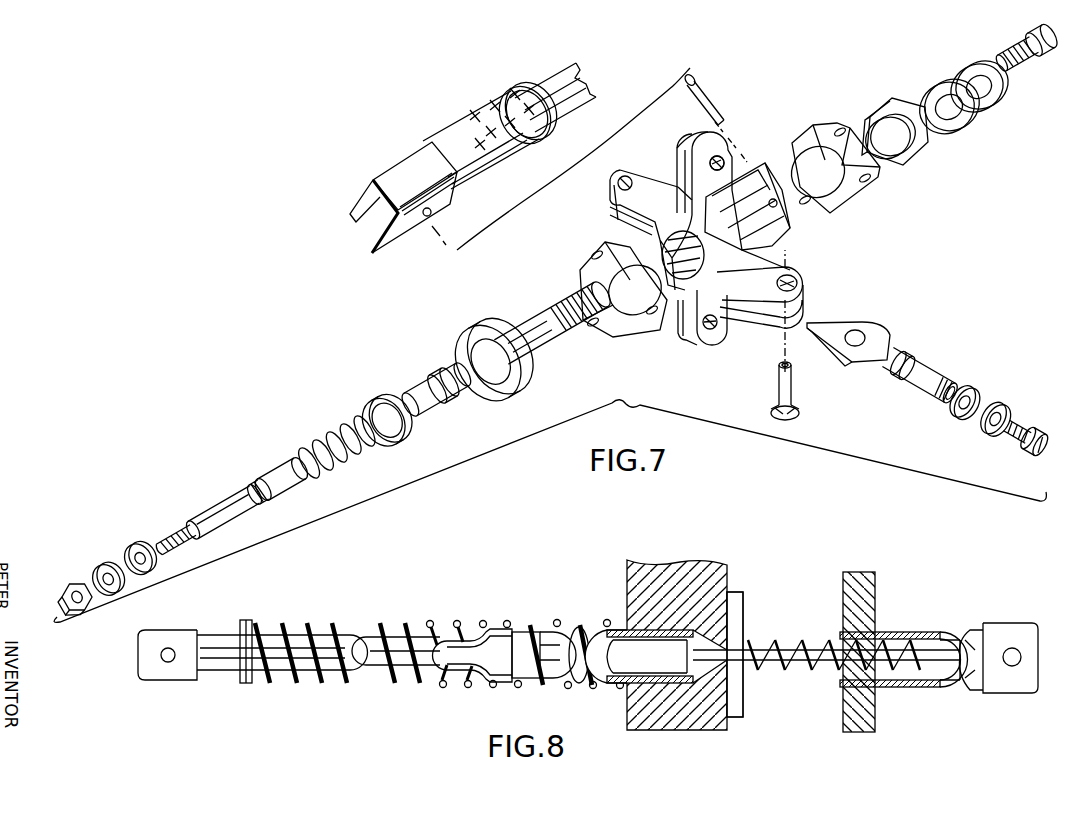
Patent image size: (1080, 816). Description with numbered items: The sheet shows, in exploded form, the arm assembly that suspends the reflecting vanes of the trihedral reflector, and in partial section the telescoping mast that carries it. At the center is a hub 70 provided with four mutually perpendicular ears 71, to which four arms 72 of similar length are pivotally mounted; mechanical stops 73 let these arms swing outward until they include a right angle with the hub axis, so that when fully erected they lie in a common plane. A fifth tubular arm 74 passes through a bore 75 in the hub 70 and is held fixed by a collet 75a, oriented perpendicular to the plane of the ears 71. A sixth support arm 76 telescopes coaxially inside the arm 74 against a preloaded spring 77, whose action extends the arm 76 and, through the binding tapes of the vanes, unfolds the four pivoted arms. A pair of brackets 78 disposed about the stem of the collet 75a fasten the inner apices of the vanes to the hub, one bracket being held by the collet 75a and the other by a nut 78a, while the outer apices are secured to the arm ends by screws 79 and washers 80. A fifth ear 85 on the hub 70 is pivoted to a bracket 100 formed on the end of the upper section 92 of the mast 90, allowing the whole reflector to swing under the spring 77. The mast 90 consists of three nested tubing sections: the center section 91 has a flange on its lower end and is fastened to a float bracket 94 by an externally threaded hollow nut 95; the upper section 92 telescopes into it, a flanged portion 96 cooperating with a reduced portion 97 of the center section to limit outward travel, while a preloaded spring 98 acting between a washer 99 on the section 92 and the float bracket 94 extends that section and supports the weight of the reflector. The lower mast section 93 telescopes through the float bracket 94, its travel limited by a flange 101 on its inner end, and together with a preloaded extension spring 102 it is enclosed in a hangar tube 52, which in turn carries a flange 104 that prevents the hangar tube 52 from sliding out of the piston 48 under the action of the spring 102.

In FIG. 7, the hub 70 is at (787, 240).
In FIG. 7, the ears 71 is at (703, 170).
In FIG. 7, the arms 72 is at (937, 375).
In FIG. 7, the mechanical stops 73 is at (845, 322).
In FIG. 7, the fifth tubular arm 74 is at (403, 385).
In FIG. 7, the bore 75 is at (688, 272).
In FIG. 7, the collet 75a is at (506, 322).
In FIG. 7, the sixth support arm 76 is at (222, 505).
In FIG. 7, the spring 77 is at (312, 450).
In FIG. 7, the brackets 78 is at (592, 268).
In FIG. 7, the nut 78a is at (880, 110).
In FIG. 7, the screws 79 is at (1018, 54).
In FIG. 7, the washers 80 is at (958, 76).
In FIG. 7, the fifth ear 85 is at (747, 172).
In FIG. 7, the mast 90 is at (563, 126).
In FIG. 8, the mast 90 is at (557, 612).
In FIG. 8, the center section 91 is at (603, 628).
In FIG. 7, the upper section 92 is at (553, 75).
In FIG. 8, the upper section 92 is at (303, 640).
In FIG. 8, the lower mast section 93 is at (770, 648).
In FIG. 8, the float bracket 94 is at (632, 710).
In FIG. 8, the externally threaded hollow nut 95 is at (743, 615).
In FIG. 8, the flanged portion 96 is at (520, 630).
In FIG. 8, the reduced portion 97 is at (478, 632).
In FIG. 8, the spring 98 is at (345, 625).
In FIG. 7, the washer 99 is at (528, 82).
In FIG. 8, the washer 99 is at (248, 624).
In FIG. 7, the bracket 100 is at (368, 198).
In FIG. 8, the bracket 100 is at (180, 635).
In FIG. 8, the flange 101 is at (690, 650).
In FIG. 8, the extension spring 102 is at (828, 647).
In FIG. 8, the flange 104 is at (843, 690).
In FIG. 8, the piston 48 is at (848, 602).
In FIG. 8, the hangar tube 52 is at (938, 607).